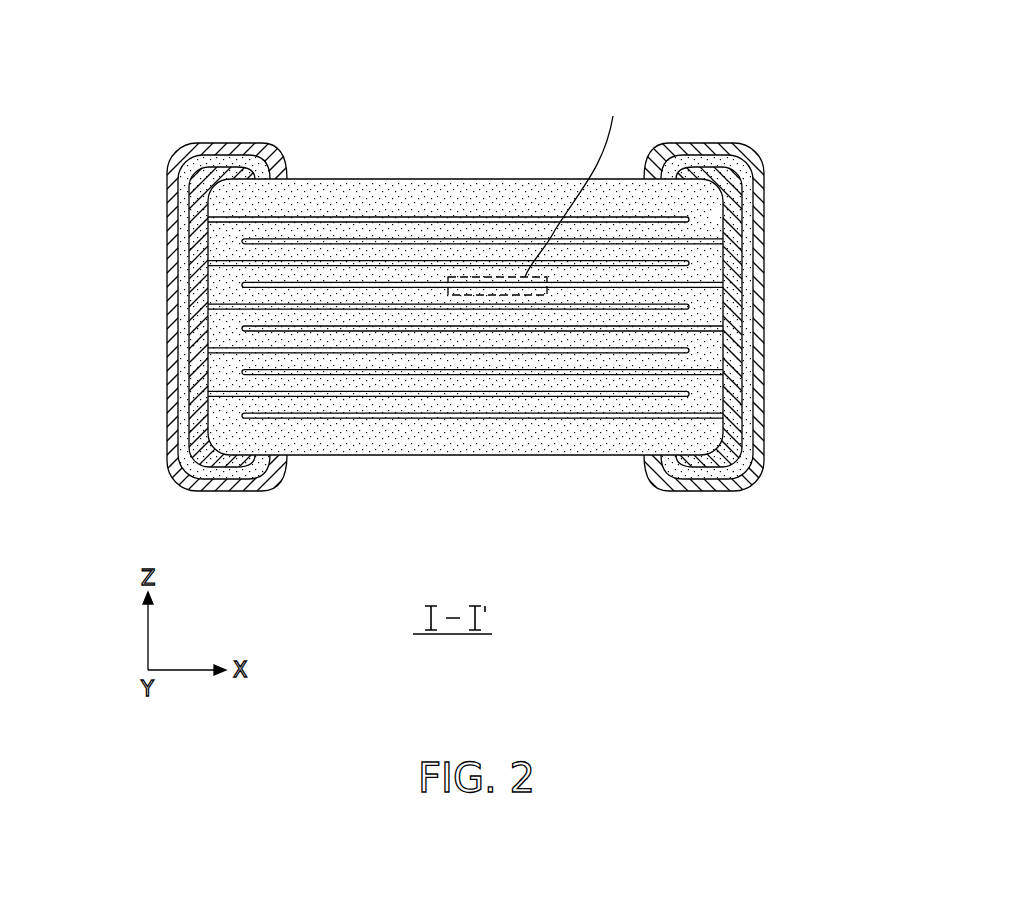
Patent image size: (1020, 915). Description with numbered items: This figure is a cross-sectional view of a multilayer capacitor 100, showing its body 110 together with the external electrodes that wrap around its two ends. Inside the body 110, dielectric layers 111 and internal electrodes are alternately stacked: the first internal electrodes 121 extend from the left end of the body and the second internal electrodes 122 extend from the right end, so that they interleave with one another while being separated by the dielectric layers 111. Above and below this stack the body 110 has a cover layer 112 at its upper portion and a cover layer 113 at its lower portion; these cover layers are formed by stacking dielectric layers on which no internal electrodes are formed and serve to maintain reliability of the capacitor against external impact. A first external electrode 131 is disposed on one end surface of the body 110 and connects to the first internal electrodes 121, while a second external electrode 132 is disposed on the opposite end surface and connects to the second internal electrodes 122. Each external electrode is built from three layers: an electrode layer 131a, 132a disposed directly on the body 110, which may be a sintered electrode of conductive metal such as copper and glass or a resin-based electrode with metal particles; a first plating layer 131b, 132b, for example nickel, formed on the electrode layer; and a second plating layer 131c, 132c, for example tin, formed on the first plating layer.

The multilayer capacitor 100 is at (510, 278).
The body 110 is at (530, 317).
The dielectric layer 111 is at (700, 256).
The cover layer 112 is at (521, 190).
The cover layer 113 is at (516, 443).
The first internal electrode 121 is at (386, 218).
The second internal electrode 122 is at (453, 239).
The first external electrode 131 is at (330, 315).
The electrode layer 131a is at (196, 276).
The first plating layer 131b is at (182, 322).
The second plating layer 131c is at (171, 368).
The second external electrode 132 is at (645, 315).
The electrode layer 132a is at (737, 287).
The first plating layer 132b is at (752, 325).
The second plating layer 132c is at (763, 368).